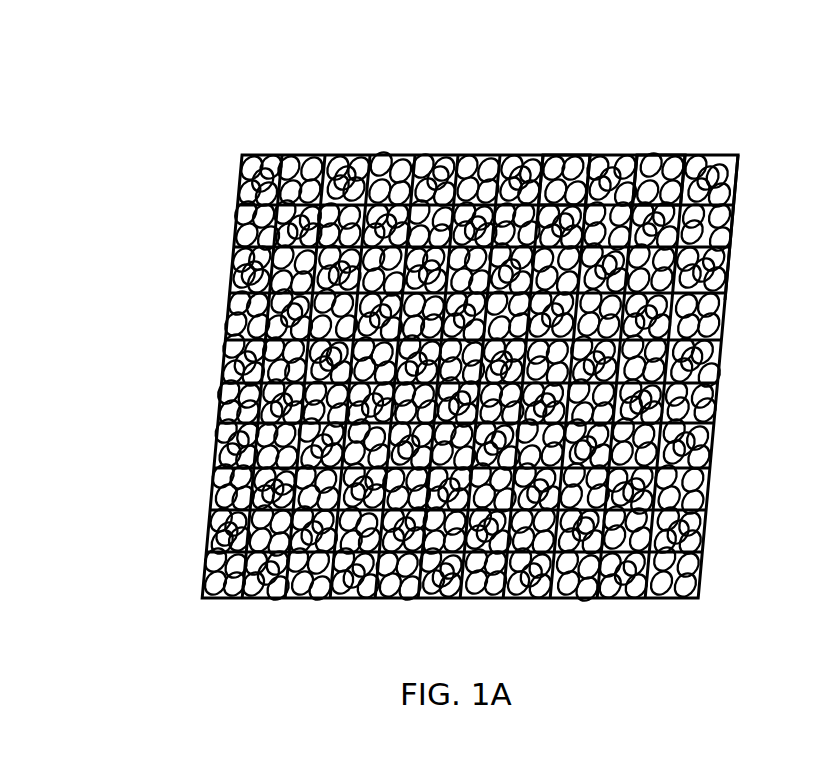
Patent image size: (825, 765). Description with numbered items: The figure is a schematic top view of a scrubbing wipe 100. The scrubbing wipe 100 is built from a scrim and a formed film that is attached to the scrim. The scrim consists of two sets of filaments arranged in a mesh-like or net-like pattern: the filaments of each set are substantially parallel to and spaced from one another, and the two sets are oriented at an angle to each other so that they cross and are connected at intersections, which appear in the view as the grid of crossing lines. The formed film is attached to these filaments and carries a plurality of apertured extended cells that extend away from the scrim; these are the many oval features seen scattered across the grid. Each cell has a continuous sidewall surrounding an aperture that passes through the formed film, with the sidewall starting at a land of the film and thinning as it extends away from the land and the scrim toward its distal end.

The scrubbing wipe 100 is at (466, 333).